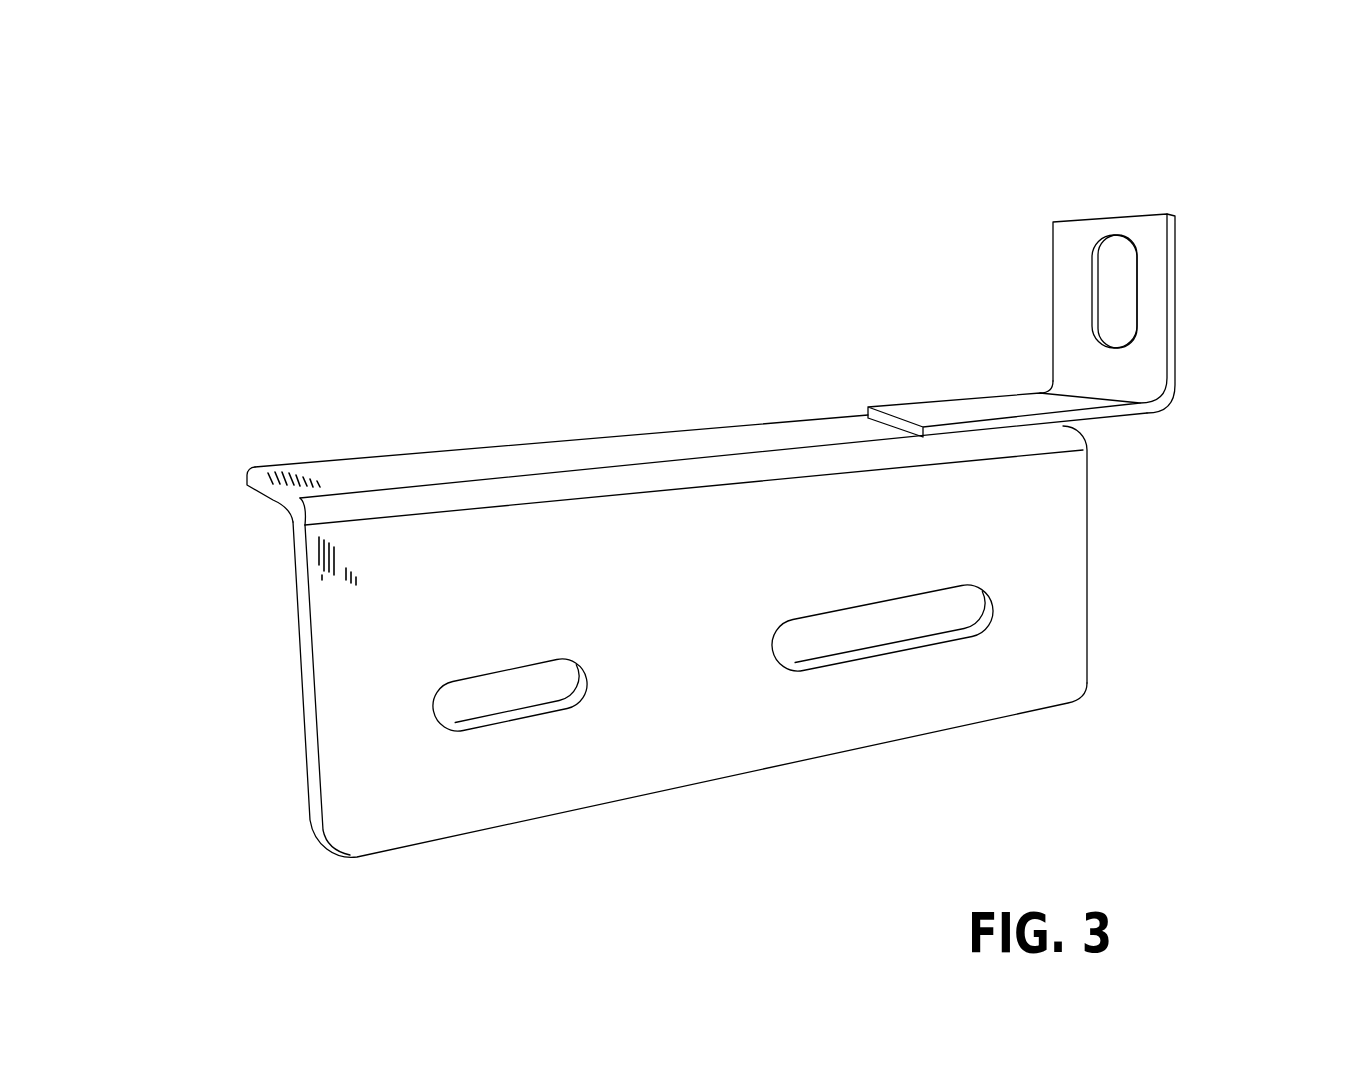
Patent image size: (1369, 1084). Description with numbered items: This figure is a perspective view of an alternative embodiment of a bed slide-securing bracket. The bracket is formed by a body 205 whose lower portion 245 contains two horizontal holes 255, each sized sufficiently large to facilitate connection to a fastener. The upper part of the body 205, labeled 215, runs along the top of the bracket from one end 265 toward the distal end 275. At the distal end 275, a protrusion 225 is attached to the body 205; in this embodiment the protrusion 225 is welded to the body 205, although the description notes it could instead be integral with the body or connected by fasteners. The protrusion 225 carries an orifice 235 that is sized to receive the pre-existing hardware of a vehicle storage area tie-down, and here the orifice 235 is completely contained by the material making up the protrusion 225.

The body 205 is at (706, 503).
The top flange 215 is at (595, 434).
The protrusion 225 is at (1118, 260).
The orifice 235 is at (1112, 283).
The lower portion 245 is at (803, 675).
The holes 255 is at (505, 703).
The first end 265 is at (163, 588).
The distal end 275 is at (1180, 509).